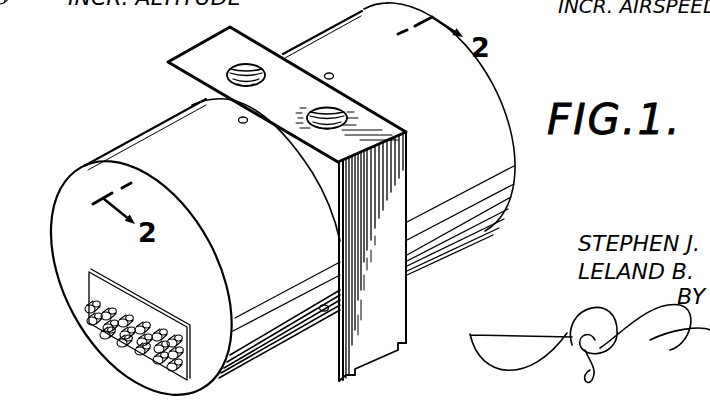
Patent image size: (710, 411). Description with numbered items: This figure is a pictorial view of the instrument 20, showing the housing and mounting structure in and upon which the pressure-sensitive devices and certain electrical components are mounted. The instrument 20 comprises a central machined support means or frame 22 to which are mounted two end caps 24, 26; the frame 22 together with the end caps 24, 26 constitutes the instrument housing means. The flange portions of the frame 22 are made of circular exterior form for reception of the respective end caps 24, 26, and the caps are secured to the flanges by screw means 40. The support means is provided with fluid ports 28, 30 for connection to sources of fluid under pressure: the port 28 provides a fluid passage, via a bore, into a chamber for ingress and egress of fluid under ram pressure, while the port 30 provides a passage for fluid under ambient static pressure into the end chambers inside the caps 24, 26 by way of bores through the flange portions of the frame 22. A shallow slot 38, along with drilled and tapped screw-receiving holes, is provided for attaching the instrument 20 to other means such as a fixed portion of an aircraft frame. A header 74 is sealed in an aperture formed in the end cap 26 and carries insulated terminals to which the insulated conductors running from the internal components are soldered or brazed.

The instrument 20 is at (534, 169).
The frame 22 is at (390, 312).
The end cap 24 is at (438, 232).
The end cap 26 is at (248, 336).
The fluid port 28 is at (340, 114).
The fluid port 30 is at (243, 65).
The shallow slot 38 is at (368, 362).
The screw means 40 is at (241, 124).
The header 74 is at (158, 320).